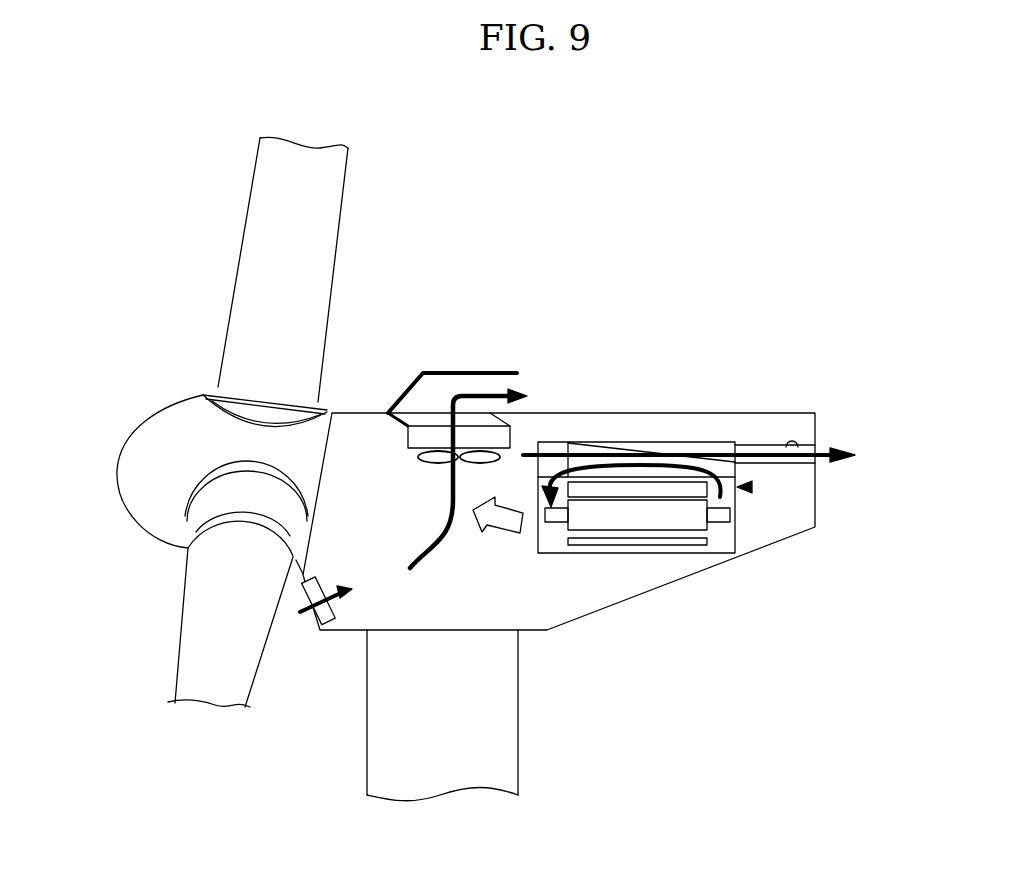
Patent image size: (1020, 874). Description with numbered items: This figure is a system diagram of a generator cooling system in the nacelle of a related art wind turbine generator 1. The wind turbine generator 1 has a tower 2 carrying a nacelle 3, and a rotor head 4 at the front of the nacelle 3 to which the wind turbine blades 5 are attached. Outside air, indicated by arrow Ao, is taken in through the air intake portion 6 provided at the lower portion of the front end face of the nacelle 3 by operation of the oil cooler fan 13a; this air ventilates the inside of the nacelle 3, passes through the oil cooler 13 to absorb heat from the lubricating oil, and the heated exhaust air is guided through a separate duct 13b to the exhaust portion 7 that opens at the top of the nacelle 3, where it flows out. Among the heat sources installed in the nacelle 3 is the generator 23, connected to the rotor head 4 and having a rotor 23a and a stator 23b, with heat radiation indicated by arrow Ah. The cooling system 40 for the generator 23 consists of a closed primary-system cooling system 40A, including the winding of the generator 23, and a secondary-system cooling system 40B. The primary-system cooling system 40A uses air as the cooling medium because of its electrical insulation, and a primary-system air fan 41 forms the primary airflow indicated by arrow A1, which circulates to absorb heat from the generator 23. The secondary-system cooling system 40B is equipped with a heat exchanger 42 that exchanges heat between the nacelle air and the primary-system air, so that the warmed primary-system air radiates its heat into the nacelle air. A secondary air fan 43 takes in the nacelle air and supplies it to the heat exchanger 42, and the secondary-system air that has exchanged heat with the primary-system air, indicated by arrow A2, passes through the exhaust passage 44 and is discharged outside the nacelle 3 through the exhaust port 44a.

The wind turbine generator 1 is at (727, 240).
The tower 2 is at (518, 708).
The nacelle 3 is at (636, 400).
The rotor head 4 is at (117, 480).
The wind turbine blade 5 is at (335, 205).
The air intake portion 6 is at (317, 623).
The exhaust portion 7 is at (513, 382).
The oil cooler 13 is at (420, 464).
The oil cooler fan 13a is at (430, 462).
The duct 13b is at (400, 423).
The generator 23 is at (606, 544).
The rotor 23a is at (570, 527).
The stator 23b is at (633, 542).
The cooling system 40 is at (672, 461).
The primary-system cooling system 40A is at (752, 487).
The secondary-system cooling system 40B is at (713, 430).
The primary-system air fan 41 is at (738, 492).
The heat exchanger 42 is at (667, 448).
The secondary air fan 43 is at (537, 463).
The exhaust passage 44 is at (792, 447).
The exhaust port 44a is at (817, 460).
The outside air flow Ao is at (480, 393).
The heat radiation Ah is at (490, 530).
The primary airflow A1 is at (590, 462).
The secondary airflow A2 is at (828, 445).